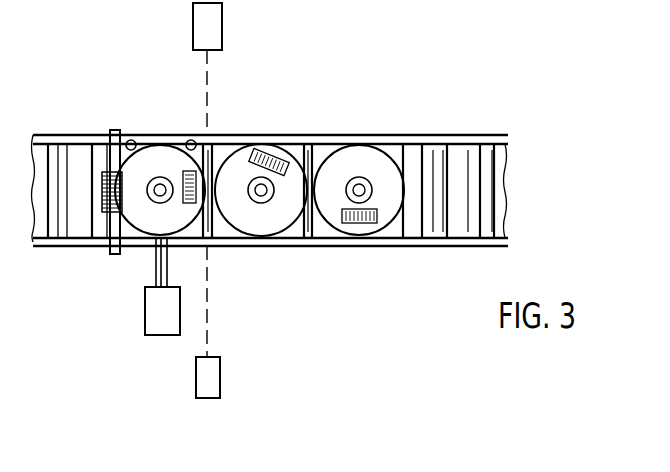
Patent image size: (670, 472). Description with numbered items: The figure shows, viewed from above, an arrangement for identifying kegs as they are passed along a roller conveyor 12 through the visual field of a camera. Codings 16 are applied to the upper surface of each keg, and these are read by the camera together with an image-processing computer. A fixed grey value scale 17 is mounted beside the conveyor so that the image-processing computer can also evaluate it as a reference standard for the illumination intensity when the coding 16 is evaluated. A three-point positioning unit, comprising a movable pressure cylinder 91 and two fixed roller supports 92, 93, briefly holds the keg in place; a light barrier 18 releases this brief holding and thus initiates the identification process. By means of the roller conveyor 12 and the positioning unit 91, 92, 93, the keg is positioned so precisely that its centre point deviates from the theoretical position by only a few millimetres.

The roller conveyor 12 is at (481, 135).
The codings 16 is at (283, 150).
The grey value scale 17 is at (104, 172).
The light barrier 18 is at (194, 33).
The pressure cylinder 91 is at (152, 312).
The roller support 92 is at (132, 141).
The roller support 93 is at (190, 141).